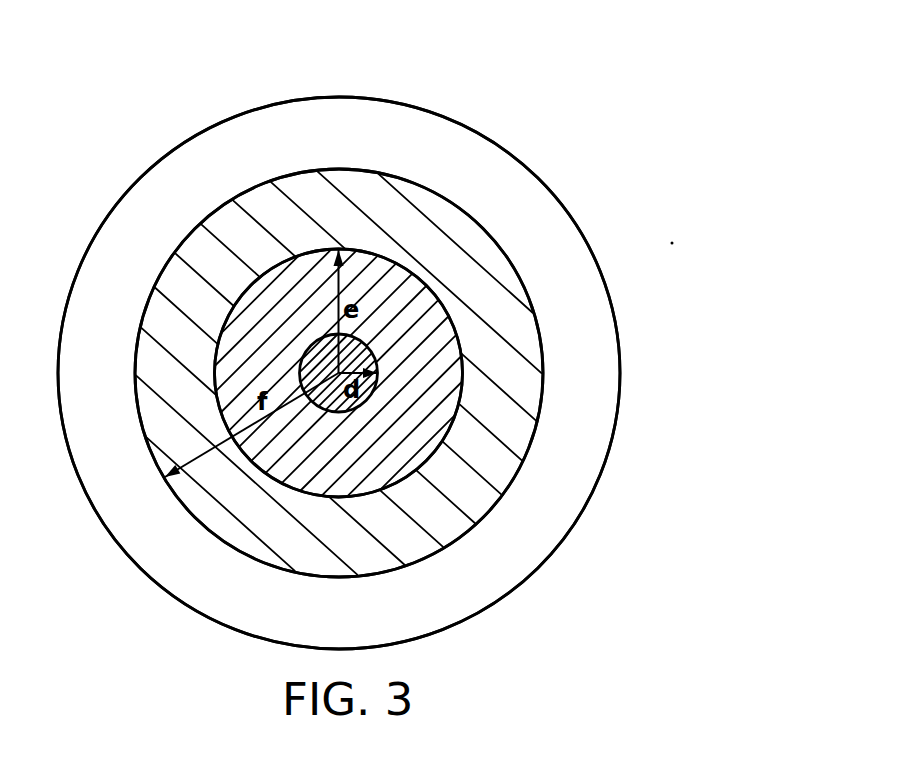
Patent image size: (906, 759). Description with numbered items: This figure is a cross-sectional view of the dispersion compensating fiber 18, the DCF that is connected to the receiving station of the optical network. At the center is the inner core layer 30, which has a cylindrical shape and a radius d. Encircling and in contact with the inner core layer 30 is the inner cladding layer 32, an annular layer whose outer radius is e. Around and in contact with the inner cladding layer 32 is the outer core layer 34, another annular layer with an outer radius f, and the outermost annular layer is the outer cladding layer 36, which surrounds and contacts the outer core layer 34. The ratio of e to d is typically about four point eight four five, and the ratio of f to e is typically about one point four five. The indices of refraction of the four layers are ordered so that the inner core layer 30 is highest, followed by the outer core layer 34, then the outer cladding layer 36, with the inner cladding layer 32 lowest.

The dispersion compensating fiber 18 is at (173, 108).
The inner core layer 30 is at (362, 335).
The inner cladding layer 32 is at (448, 333).
The outer core layer 34 is at (493, 490).
The outer cladding layer 36 is at (505, 585).